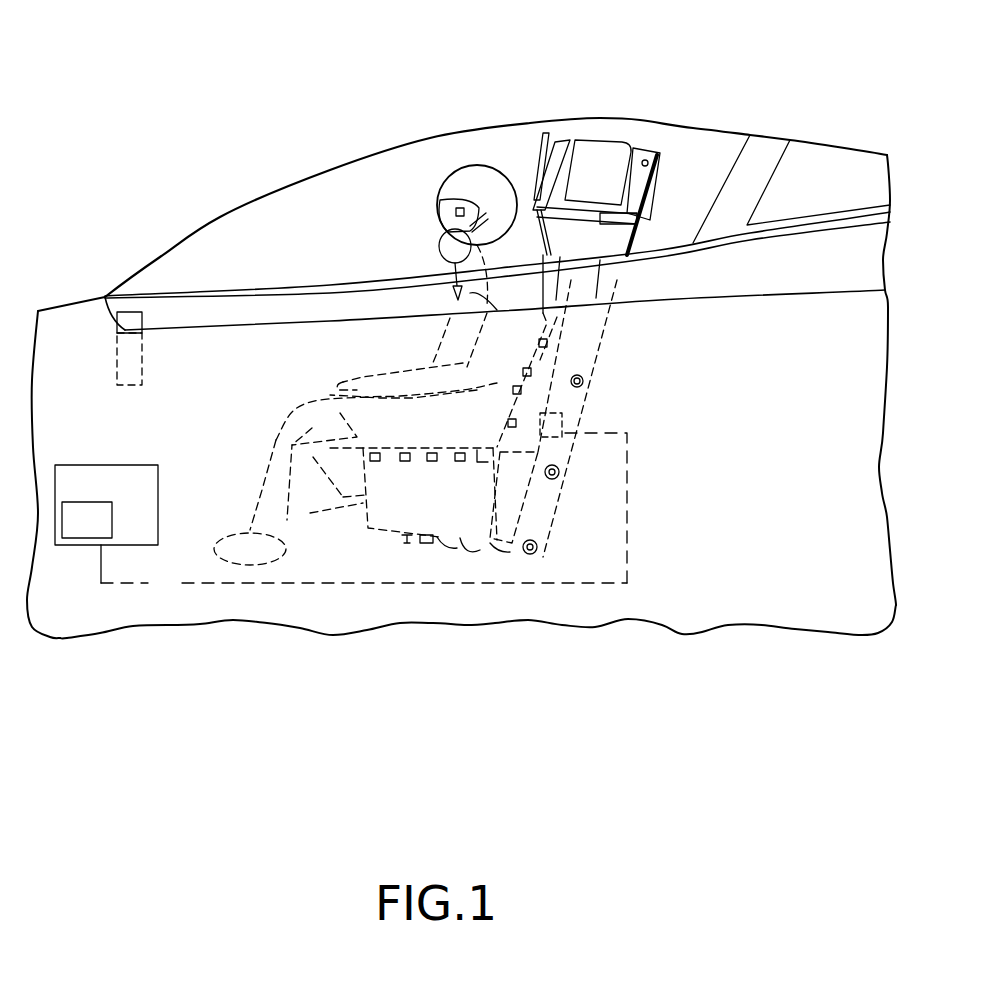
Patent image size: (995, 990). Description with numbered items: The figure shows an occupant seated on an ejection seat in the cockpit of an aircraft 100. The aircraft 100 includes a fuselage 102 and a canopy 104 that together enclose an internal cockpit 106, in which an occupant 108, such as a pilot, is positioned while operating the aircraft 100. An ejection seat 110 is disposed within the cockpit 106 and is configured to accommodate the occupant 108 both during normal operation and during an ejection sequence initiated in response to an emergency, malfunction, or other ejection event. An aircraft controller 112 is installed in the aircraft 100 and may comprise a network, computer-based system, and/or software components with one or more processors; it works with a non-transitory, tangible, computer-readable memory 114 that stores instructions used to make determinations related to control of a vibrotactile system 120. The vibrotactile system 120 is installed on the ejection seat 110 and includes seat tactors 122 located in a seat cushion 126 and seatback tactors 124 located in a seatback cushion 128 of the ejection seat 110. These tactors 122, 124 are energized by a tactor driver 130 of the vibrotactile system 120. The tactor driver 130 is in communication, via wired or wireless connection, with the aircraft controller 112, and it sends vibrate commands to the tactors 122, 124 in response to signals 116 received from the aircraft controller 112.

The aircraft 100 is at (185, 125).
The fuselage 102 is at (788, 502).
The canopy 104 is at (420, 135).
The cockpit 106 is at (240, 244).
The occupant 108 is at (490, 190).
The ejection seat 110 is at (593, 293).
The aircraft controller 112 is at (118, 494).
The memory 114 is at (103, 531).
The signals 116 is at (364, 571).
The vibrotactile system 120 is at (655, 432).
The seat tactors 122 is at (430, 462).
The seatback tactors 124 is at (549, 346).
The seat cushion 126 is at (482, 463).
The seatback cushion 128 is at (557, 317).
The tactor driver 130 is at (563, 423).